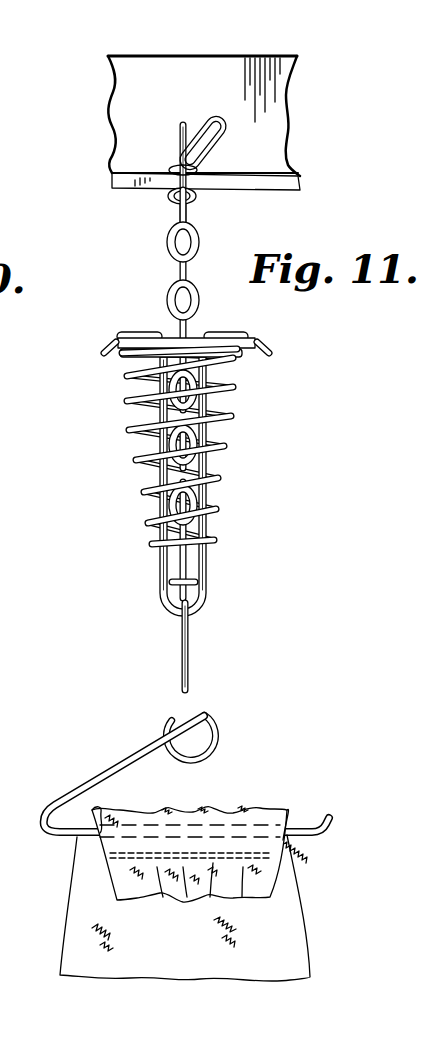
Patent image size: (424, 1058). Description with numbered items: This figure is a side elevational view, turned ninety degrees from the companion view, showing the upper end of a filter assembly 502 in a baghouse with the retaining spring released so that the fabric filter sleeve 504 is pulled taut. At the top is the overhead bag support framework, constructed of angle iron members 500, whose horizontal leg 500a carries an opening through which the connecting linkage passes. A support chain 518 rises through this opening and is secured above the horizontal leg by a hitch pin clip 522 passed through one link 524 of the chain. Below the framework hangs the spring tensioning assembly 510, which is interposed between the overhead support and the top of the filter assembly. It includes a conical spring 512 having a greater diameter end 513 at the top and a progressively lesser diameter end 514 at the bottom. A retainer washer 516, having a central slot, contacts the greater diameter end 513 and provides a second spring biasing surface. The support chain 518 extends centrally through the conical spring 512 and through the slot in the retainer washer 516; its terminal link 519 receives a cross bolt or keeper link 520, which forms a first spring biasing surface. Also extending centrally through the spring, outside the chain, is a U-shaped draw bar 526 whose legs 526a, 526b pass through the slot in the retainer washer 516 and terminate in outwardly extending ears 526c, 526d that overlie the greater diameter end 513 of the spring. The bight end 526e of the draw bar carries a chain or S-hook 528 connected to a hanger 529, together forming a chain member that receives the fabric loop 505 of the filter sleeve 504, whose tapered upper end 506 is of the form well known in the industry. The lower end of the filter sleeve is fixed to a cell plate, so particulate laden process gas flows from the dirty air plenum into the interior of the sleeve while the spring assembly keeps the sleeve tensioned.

The angle iron member 500 is at (309, 125).
The horizontal leg 500a is at (299, 182).
The hitch pin clip 522 is at (183, 125).
The link 524 is at (174, 165).
The support chain 518 is at (170, 290).
The spring tensioning assembly 510 is at (210, 468).
The retainer washer 516 is at (250, 358).
The greater diameter end 513 is at (124, 360).
The draw bar 526 is at (187, 497).
The leg 526a is at (160, 481).
The leg 526b is at (212, 498).
The ear 526c is at (128, 336).
The ear 526d is at (214, 333).
The bight end 526e is at (206, 612).
The conical spring 512 is at (230, 449).
The lesser diameter end 514 is at (152, 544).
The terminal link 519 is at (205, 529).
The cross bolt or keeper link 520 is at (185, 569).
The chain or S-hook 528 is at (187, 659).
The hanger 529 is at (208, 717).
The filter assembly 502 is at (186, 769).
The filter sleeve 504 is at (75, 911).
The fabric loop 505 is at (247, 807).
The tapered upper end 506 is at (280, 862).